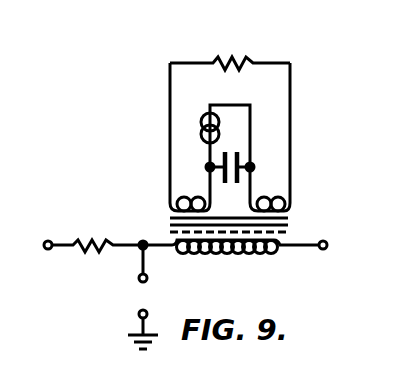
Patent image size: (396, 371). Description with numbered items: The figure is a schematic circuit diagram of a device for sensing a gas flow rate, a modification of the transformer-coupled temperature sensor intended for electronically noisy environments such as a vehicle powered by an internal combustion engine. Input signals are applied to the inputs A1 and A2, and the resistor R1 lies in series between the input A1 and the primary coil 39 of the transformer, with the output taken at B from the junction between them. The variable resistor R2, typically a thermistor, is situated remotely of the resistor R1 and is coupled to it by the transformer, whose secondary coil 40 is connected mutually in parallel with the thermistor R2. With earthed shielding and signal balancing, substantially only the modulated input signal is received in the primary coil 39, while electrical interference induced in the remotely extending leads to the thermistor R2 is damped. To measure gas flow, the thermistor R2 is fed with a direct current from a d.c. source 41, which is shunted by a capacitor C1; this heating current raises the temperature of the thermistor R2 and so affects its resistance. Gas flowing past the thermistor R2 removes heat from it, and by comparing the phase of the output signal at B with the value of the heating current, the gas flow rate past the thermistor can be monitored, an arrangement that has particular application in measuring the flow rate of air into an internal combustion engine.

The primary coil 39 is at (245, 254).
The secondary coil 40 is at (172, 212).
The d.c. source 41 is at (203, 116).
The resistor R1 is at (97, 235).
The variable resistor (thermistor) R2 is at (230, 53).
The capacitor C1 is at (239, 167).
The input A1 is at (37, 246).
The input A2 is at (337, 246).
The output B is at (152, 273).